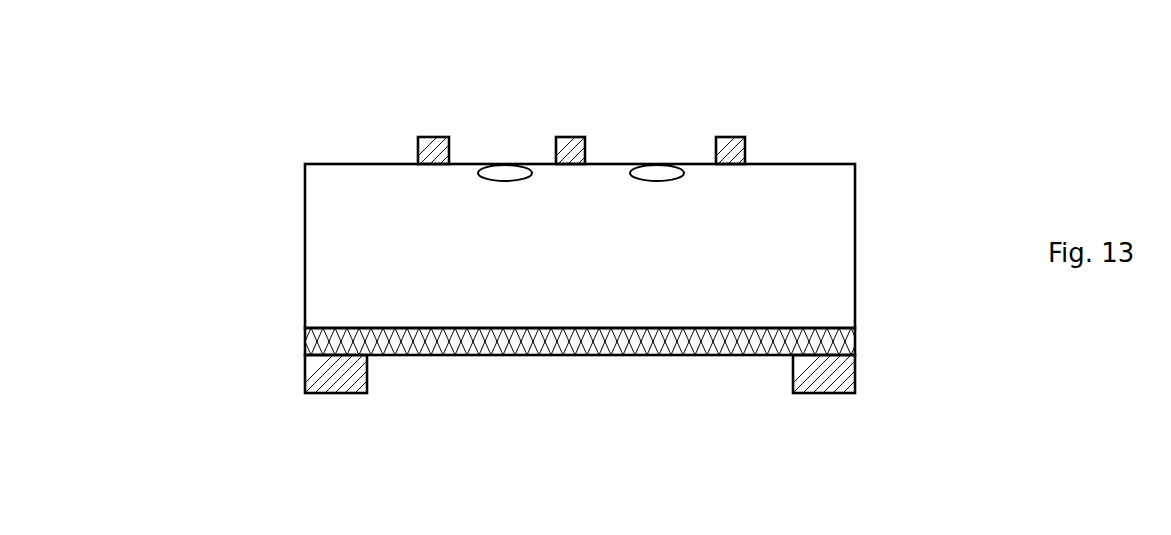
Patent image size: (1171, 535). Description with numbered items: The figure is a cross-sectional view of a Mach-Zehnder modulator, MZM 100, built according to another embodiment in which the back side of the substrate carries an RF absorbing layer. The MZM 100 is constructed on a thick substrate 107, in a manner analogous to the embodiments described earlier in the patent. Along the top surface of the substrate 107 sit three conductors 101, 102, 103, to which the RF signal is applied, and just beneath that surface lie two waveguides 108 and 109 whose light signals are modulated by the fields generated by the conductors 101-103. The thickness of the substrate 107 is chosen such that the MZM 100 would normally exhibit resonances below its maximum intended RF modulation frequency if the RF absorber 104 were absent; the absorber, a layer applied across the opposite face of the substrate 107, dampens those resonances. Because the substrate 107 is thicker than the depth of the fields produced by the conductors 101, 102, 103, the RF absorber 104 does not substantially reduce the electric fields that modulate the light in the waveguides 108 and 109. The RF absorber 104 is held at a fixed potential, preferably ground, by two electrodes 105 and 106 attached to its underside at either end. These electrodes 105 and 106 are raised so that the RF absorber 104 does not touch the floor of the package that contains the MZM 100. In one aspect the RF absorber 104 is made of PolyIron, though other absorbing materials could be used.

The MZM 100 is at (149, 100).
The conductor 101 is at (420, 138).
The conductor 102 is at (562, 138).
The conductor 103 is at (717, 138).
The RF absorber 104 is at (567, 340).
The electrode 105 is at (343, 385).
The electrode 106 is at (830, 385).
The substrate 107 is at (396, 288).
The waveguide 108 is at (497, 178).
The waveguide 109 is at (653, 178).